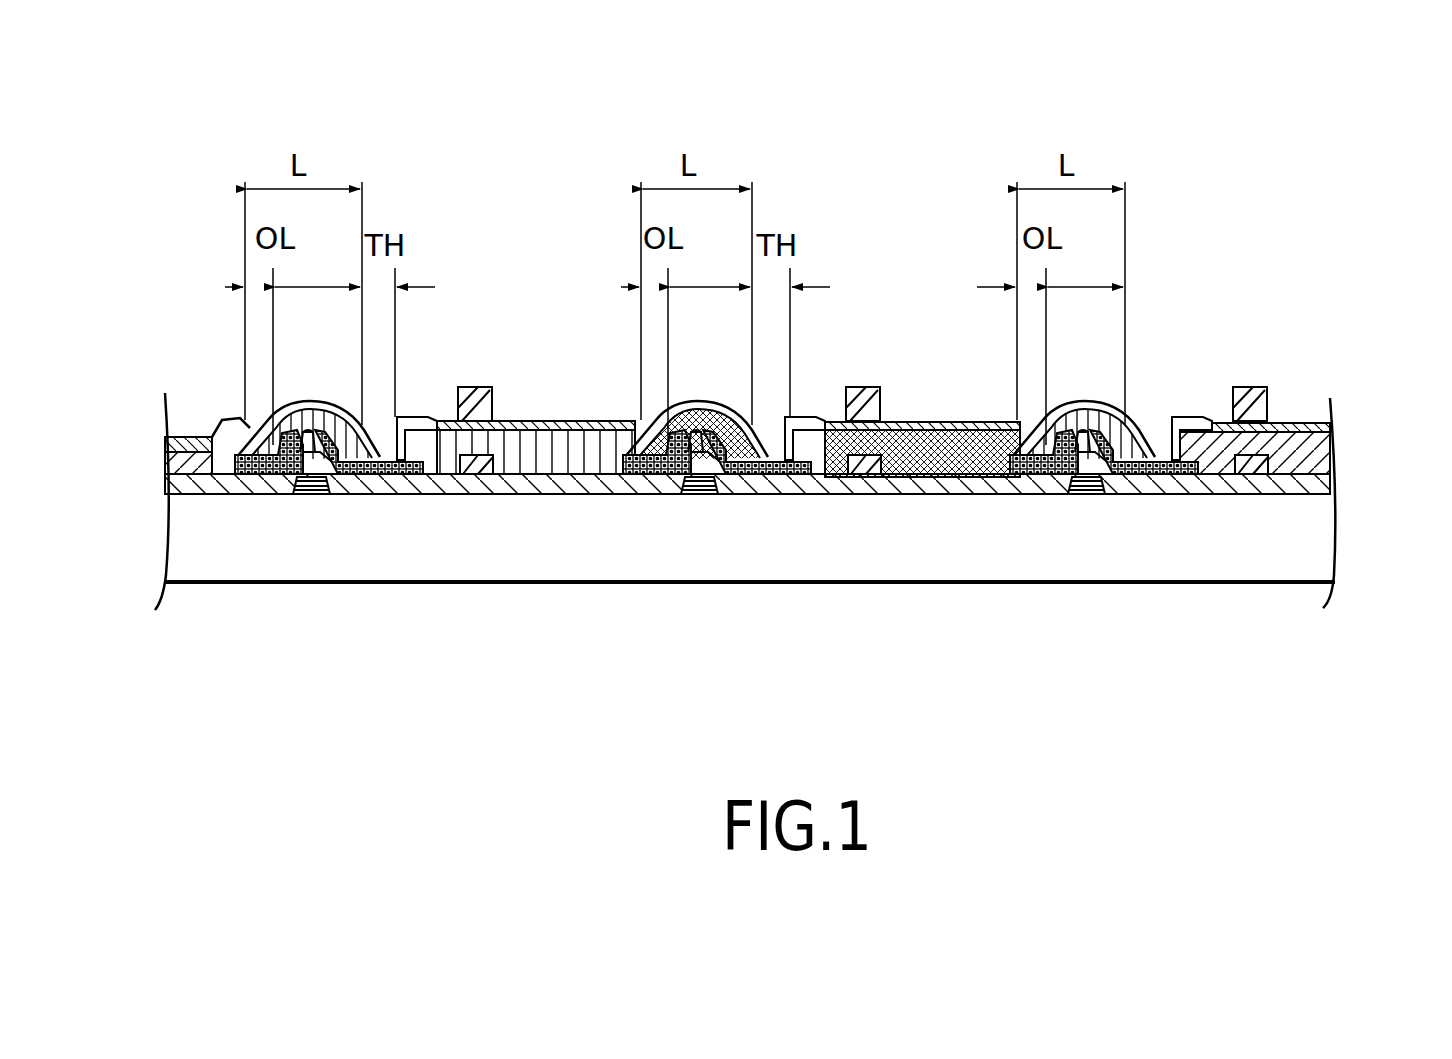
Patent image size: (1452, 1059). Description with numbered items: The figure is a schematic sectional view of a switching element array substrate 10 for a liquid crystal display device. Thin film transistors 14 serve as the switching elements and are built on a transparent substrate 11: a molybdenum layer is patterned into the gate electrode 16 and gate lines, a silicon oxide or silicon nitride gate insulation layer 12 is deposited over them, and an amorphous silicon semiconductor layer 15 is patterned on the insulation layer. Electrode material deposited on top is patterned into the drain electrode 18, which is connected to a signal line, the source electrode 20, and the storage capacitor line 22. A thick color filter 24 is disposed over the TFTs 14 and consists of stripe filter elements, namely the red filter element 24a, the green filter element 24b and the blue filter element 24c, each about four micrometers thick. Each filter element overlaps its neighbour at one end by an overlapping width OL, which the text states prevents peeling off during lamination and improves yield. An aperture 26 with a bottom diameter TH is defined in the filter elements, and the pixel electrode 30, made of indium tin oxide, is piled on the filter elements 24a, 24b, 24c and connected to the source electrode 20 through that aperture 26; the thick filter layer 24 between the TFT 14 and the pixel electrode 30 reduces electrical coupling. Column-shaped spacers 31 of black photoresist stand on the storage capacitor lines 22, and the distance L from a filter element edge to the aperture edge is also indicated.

The array substrate 10 is at (560, 226).
The transparent substrate 11 is at (1313, 550).
The gate insulation layer 12 is at (1313, 488).
The thin film transistor 14 is at (248, 630).
The semiconductor layer 15 is at (293, 496).
The gate electrode 16 is at (323, 496).
The drain electrode 18 is at (283, 418).
The source electrode 20 is at (327, 410).
The storage capacitor line 22 is at (473, 480).
The color filter 24 is at (1358, 443).
The red filter element 24a is at (540, 445).
The green filter element 24b is at (905, 445).
The blue filter element 24c is at (178, 463).
The aperture 26 is at (402, 432).
The pixel electrode 30 is at (208, 443).
The spacer 31 is at (475, 387).